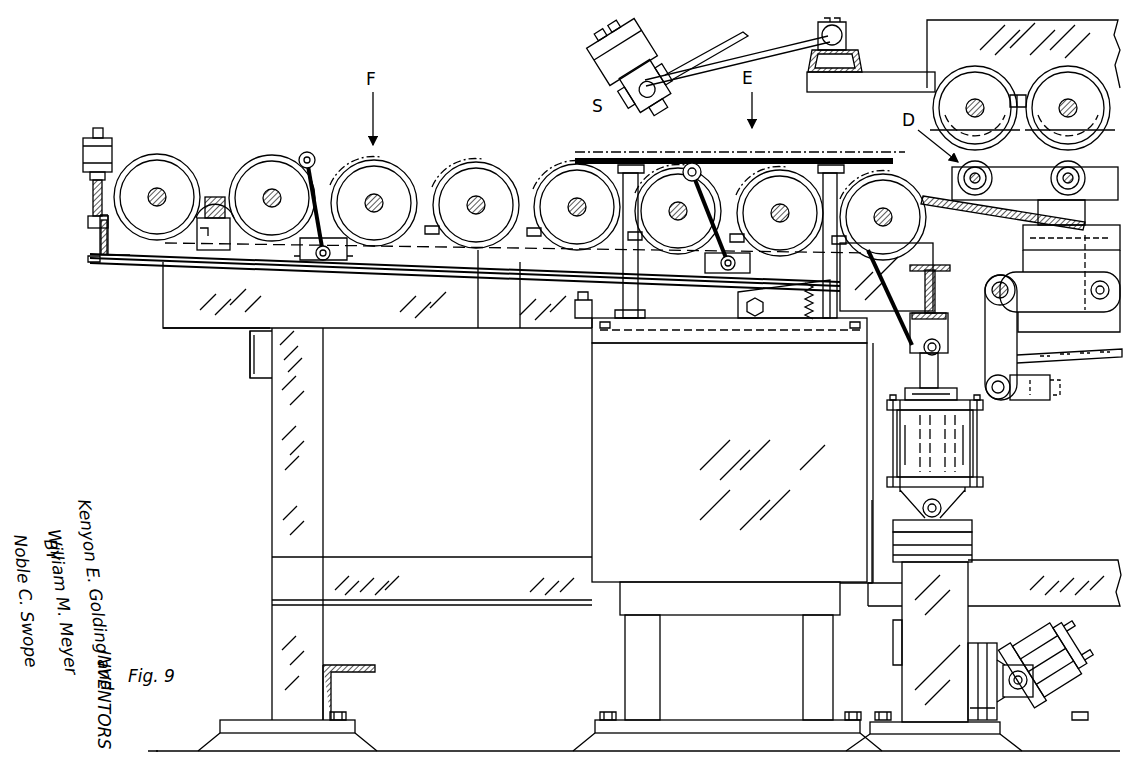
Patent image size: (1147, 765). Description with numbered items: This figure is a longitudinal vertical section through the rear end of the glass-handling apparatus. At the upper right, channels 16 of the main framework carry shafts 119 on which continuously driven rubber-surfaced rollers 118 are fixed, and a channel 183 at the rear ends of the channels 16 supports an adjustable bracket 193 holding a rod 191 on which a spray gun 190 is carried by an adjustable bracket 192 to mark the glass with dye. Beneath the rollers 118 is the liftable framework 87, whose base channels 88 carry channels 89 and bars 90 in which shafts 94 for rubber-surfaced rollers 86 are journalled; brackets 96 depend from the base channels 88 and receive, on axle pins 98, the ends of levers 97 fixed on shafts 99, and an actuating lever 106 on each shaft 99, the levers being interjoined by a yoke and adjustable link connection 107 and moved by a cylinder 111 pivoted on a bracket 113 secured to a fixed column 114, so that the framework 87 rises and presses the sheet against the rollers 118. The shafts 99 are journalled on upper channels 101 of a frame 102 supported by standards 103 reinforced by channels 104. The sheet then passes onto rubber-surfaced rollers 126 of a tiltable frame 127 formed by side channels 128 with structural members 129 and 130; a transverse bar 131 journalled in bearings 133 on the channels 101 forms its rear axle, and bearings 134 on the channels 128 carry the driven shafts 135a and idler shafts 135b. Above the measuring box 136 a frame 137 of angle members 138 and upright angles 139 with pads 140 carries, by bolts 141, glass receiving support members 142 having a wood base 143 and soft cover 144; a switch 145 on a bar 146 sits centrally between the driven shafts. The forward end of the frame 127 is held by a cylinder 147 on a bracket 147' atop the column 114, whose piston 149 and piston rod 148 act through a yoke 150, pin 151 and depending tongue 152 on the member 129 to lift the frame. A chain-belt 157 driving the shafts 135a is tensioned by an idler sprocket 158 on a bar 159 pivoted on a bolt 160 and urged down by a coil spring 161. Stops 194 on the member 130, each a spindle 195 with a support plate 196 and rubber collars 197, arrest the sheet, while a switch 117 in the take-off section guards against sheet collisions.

The channels 16 is at (935, 50).
The rubber-surfaced rollers 86 is at (992, 180).
The framework 87 is at (1034, 193).
The base channels 88 is at (1035, 233).
The channels 89 is at (1085, 210).
The bars 90 is at (958, 182).
The shafts 94 is at (1068, 178).
The brackets 96 is at (1095, 262).
The levers 97 is at (1035, 300).
The axle pins 98 is at (1103, 305).
The shafts 99 is at (1018, 287).
The upper channels 101 is at (398, 330).
The frame 102 is at (425, 305).
The standards 103 is at (282, 420).
The channels 104 is at (252, 376).
The actuating lever 106 is at (1005, 344).
The yoke and adjustable link connection 107 is at (1012, 392).
The cylinder 111 is at (1058, 652).
The bracket 113 is at (1008, 700).
The fixed column 114 is at (918, 652).
The switch 117 is at (312, 190).
The rubber-surfaced rollers 118 is at (968, 80).
The shafts 119 is at (975, 98).
The rubber-surfaced rollers 126 is at (155, 172).
The tiltable frame 127 is at (482, 262).
The side channels 128 is at (524, 272).
The structural member 129 is at (932, 278).
The structural member 130 is at (90, 266).
The bar 131 is at (212, 196).
The bearings 133 is at (218, 196).
The bearings 134 is at (430, 182).
The driven shafts 135a is at (578, 217).
The idler shafts 135b is at (163, 190).
The box 136 is at (630, 430).
The frame 137 is at (660, 335).
The angle members 138 is at (590, 310).
The angles 139 is at (636, 292).
The pad 140 is at (640, 185).
The bolts 141 is at (632, 165).
The glass receiving support members 142 is at (735, 178).
The base 143 is at (612, 170).
The cover 144 is at (700, 170).
The switch 145 is at (722, 270).
The bar 146 is at (414, 274).
The cylinder 147 is at (957, 441).
The bracket 147' is at (962, 509).
The piston rod 148 is at (912, 390).
The piston 149 is at (976, 458).
The yoke 150 is at (920, 362).
The pin 151 is at (940, 352).
The depending tongue 152 is at (928, 325).
The chain-belt 157 is at (1066, 387).
The idler sprocket 158 is at (868, 355).
The bar 159 is at (780, 305).
The bolt 160 is at (755, 316).
The coil spring 161 is at (812, 320).
The channel 183 is at (862, 60).
The spray gun 190 is at (618, 58).
The rod 191 is at (690, 62).
The adjustable bracket 192 is at (652, 72).
The adjustable bracket 193 is at (820, 25).
The stops 194 is at (110, 133).
The spindle 195 is at (93, 200).
The support plate 196 is at (90, 176).
The rubber collars 197 is at (83, 155).